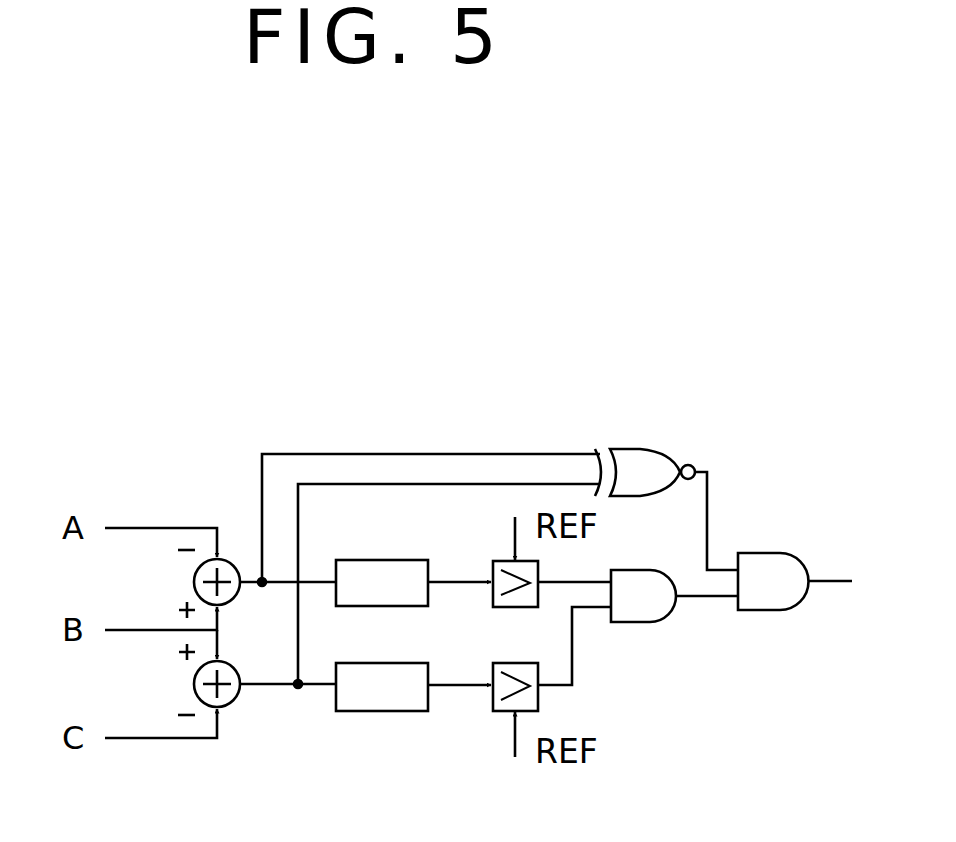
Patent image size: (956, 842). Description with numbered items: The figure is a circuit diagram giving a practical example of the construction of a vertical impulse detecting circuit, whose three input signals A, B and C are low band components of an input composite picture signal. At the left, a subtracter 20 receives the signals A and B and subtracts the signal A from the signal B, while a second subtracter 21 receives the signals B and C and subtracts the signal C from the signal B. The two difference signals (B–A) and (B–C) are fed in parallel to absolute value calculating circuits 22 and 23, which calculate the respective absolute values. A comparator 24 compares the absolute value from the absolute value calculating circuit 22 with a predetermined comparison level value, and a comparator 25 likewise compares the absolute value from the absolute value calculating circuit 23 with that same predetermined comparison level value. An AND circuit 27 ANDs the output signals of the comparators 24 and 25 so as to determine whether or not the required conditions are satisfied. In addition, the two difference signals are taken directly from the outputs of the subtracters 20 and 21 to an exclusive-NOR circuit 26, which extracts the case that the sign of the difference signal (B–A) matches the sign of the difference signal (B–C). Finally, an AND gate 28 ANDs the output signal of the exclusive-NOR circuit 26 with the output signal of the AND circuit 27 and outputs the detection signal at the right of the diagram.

The subtracter 20 is at (193, 582).
The subtracter 21 is at (193, 684).
The absolute value calculating circuit 22 is at (390, 560).
The absolute value calculating circuit 23 is at (402, 712).
The comparator 24 is at (493, 561).
The comparator 25 is at (493, 699).
The exclusive-NOR circuit 26 is at (645, 449).
The AND circuit 27 is at (647, 570).
The AND gate 28 is at (785, 553).